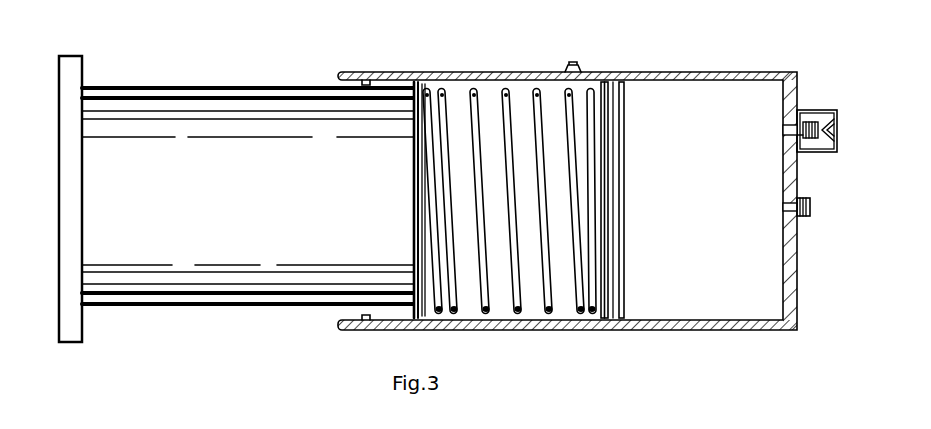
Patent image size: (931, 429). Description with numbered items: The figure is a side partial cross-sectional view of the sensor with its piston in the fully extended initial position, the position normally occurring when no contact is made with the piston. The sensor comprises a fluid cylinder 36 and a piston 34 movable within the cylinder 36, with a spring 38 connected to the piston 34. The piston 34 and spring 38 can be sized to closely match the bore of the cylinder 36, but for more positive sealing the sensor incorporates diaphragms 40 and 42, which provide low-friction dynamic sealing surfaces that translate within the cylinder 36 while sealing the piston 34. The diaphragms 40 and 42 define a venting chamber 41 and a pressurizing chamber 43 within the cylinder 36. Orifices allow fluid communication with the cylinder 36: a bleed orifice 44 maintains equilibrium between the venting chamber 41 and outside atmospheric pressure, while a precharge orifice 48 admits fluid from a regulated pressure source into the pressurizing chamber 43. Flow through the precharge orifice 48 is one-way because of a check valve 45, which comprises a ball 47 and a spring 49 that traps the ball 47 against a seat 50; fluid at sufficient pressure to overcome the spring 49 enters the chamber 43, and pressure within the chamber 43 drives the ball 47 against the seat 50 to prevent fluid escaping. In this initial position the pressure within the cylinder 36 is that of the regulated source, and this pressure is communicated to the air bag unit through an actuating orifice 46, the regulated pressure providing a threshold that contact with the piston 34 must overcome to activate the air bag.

The piston 34 is at (151, 305).
The fluid cylinder 36 is at (744, 72).
The spring 38 is at (508, 88).
The diaphragm 40 is at (414, 78).
The venting chamber 41 is at (453, 88).
The diaphragm 42 is at (603, 80).
The pressurizing chamber 43 is at (683, 184).
The bleed orifice 44 is at (571, 58).
The one-way check valve 45 is at (822, 110).
The actuating orifice 46 is at (817, 207).
The ball 47 is at (833, 133).
The precharge orifice 48 is at (790, 121).
The spring 49 is at (793, 137).
The seat 50 is at (826, 152).